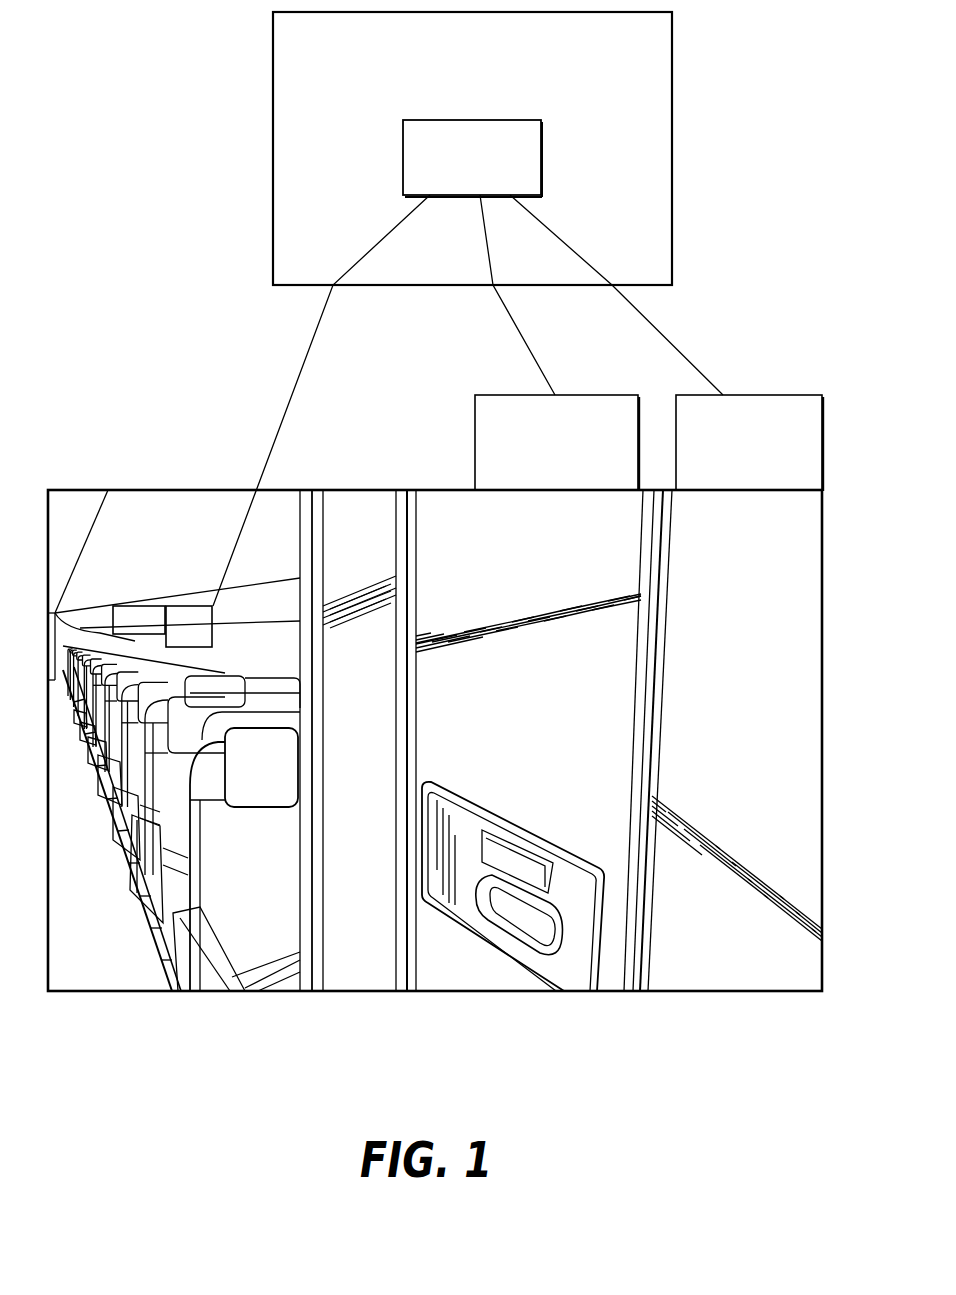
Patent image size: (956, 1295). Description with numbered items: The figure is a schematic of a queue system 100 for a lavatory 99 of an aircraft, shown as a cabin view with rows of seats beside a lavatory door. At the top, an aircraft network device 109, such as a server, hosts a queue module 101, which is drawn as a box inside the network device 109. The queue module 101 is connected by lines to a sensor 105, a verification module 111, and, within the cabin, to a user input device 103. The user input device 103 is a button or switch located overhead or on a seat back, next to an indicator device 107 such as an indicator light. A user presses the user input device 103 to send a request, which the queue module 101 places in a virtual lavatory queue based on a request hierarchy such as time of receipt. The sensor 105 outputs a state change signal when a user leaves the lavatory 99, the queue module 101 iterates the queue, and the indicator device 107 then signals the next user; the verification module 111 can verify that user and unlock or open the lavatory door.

The queue system 100 is at (790, 218).
The aircraft network device 109 is at (621, 61).
The queue module 101 is at (492, 168).
The sensor 105 is at (576, 457).
The verification module 111 is at (768, 457).
The lavatory 99 is at (730, 598).
The indicator device 107 is at (128, 606).
The user input device 103 is at (190, 624).